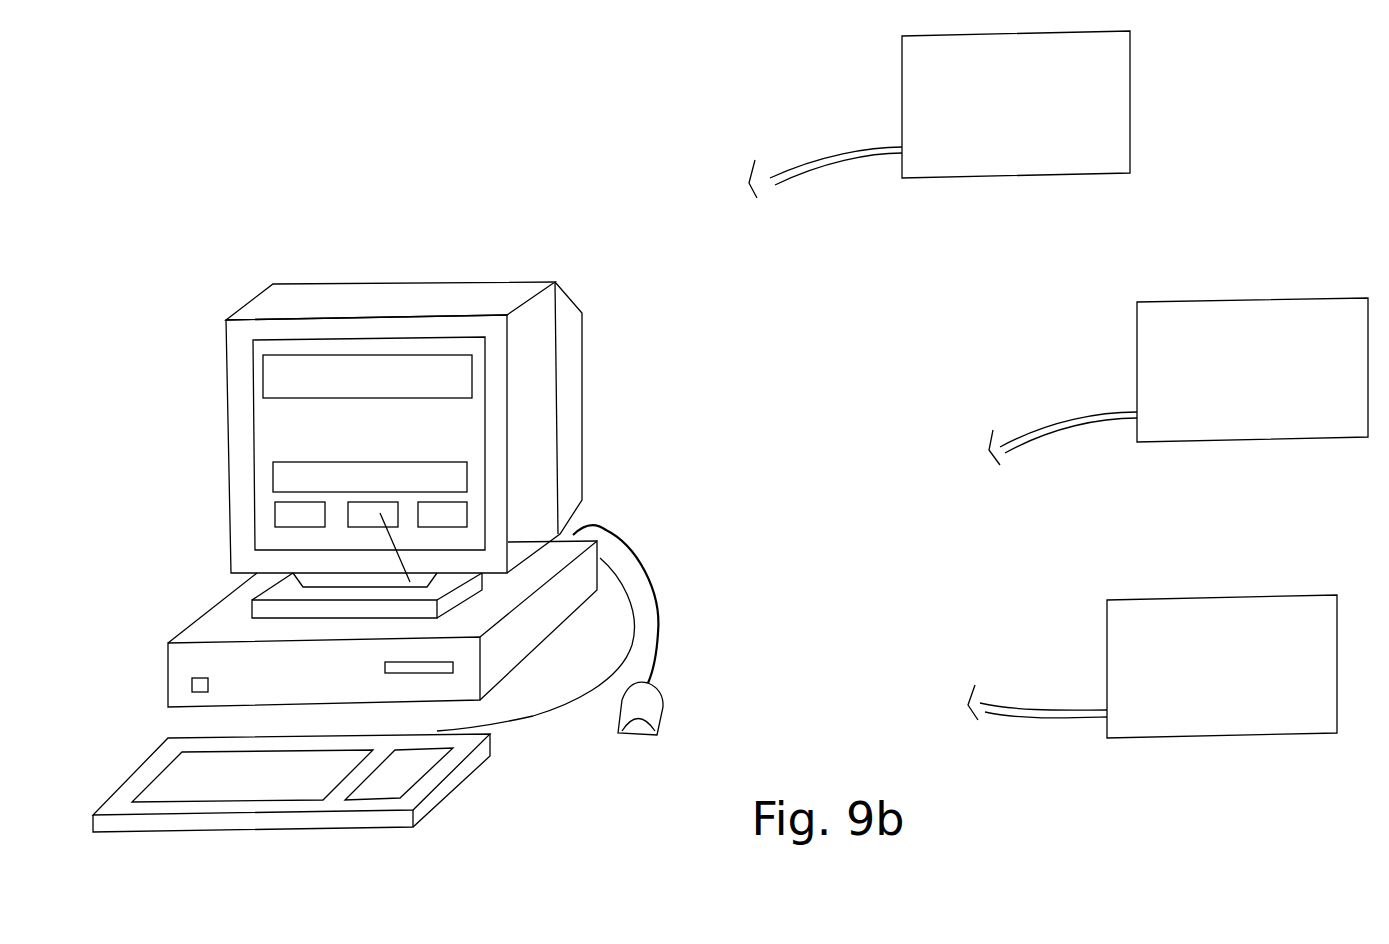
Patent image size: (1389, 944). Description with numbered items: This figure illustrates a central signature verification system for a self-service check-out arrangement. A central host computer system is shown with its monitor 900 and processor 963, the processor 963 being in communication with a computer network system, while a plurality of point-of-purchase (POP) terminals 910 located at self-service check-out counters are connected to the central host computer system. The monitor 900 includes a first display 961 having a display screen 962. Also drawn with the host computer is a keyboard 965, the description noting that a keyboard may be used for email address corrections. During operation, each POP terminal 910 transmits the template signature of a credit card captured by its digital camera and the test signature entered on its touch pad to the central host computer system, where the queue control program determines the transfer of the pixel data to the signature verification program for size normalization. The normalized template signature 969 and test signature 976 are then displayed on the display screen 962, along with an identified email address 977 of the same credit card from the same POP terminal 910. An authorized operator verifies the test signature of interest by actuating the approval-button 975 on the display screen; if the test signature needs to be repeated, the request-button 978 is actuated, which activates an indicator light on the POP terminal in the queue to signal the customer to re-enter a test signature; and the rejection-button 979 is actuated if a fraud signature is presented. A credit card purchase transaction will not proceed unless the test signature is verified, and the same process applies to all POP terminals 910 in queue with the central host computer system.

The monitor 900 is at (450, 295).
The first display 961 is at (332, 340).
The display screen 962 is at (560, 368).
The processor 963 is at (503, 650).
The keyboard 965 is at (433, 802).
The normalized template signature 969 is at (293, 357).
The approval-button 975 is at (290, 515).
The test signature 976 is at (287, 389).
The e-mail address display 977 is at (290, 436).
The request-button 978 is at (440, 573).
The rejection-button 979 is at (452, 515).
The point-of-purchase (POP) terminal 910 is at (898, 108).